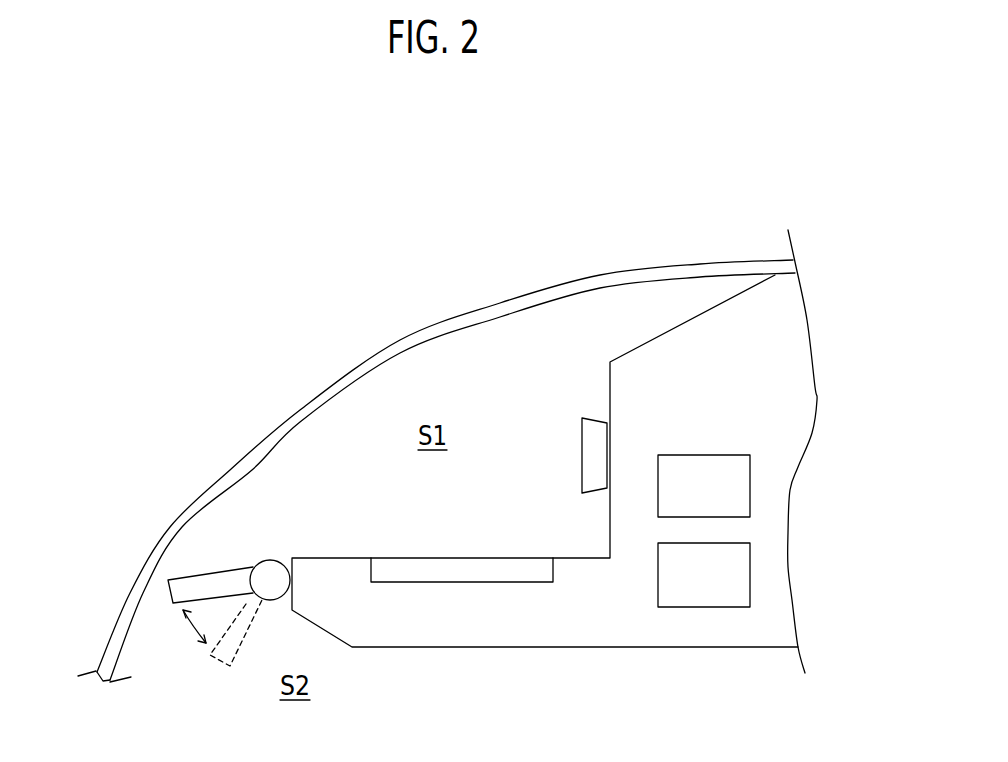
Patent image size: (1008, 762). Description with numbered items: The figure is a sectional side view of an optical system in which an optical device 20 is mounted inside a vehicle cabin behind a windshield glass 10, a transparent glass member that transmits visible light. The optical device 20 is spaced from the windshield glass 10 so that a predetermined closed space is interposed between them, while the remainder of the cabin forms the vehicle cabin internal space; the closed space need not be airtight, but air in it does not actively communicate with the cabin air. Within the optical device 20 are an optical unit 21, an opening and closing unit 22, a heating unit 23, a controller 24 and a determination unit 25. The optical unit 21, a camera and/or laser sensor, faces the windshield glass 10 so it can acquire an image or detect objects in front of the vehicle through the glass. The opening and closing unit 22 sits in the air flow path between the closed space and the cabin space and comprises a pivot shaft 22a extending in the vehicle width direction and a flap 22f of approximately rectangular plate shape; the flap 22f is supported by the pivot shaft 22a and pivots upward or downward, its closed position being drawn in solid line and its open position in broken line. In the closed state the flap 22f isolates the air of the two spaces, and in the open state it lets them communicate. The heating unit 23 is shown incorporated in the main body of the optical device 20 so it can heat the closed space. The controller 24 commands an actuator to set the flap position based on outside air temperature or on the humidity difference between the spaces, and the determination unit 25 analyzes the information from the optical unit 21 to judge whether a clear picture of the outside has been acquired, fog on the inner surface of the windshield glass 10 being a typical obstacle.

The windshield glass 10 is at (130, 594).
The optical device 20 is at (718, 419).
The optical unit 21 is at (582, 443).
The opening and closing unit 22 is at (258, 624).
The pivot shaft 22a is at (272, 560).
The flap 22f is at (215, 573).
The heating unit 23 is at (448, 557).
The controller 24 is at (750, 583).
The determination unit 25 is at (750, 490).